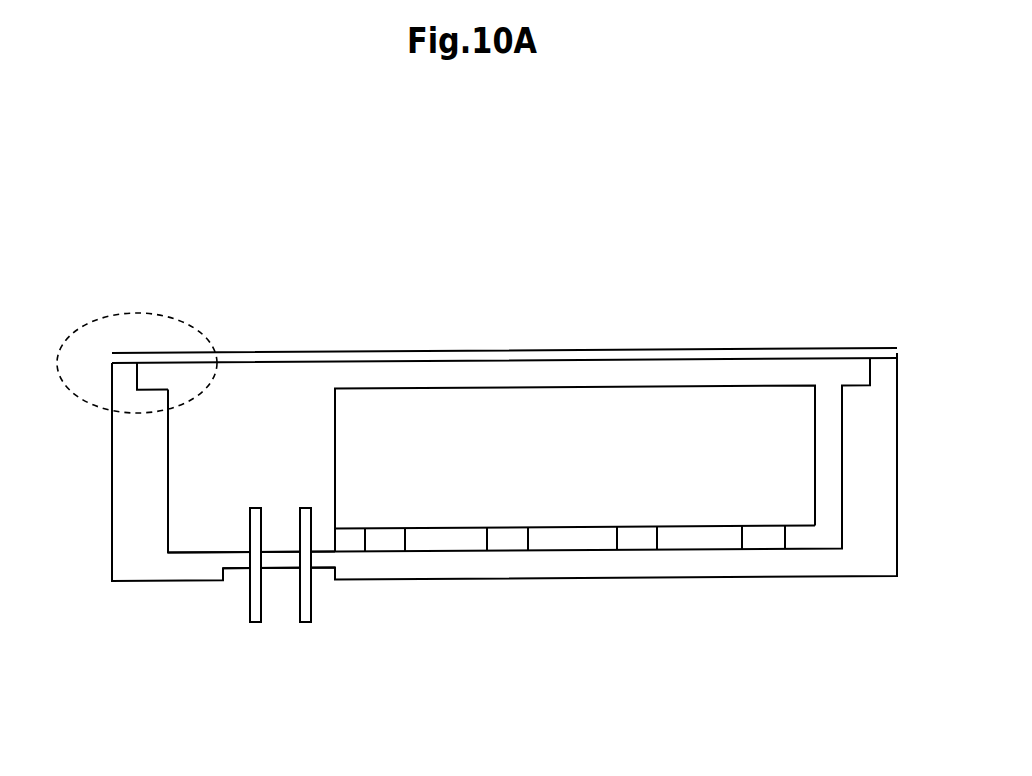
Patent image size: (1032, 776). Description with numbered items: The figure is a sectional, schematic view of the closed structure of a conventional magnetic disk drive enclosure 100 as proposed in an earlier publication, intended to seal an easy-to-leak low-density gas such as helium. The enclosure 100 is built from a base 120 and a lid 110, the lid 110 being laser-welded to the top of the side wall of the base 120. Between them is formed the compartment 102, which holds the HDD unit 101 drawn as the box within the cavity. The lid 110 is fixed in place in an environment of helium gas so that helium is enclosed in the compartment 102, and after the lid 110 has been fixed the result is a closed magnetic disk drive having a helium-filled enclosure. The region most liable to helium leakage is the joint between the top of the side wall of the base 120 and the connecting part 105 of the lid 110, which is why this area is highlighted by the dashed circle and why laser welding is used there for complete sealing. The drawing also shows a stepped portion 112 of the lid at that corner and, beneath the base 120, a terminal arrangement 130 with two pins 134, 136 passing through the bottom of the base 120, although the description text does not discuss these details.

The enclosure 100 is at (574, 287).
The HDD unit 101 is at (335, 455).
The compartment 102 is at (745, 366).
The connecting part 105 is at (127, 315).
The lid 110 is at (435, 349).
The stepped portion of lid 112 is at (123, 353).
The base 120 is at (573, 578).
The external terminal 130 is at (285, 626).
The lead pin 134 is at (253, 622).
The lead pin 136 is at (305, 622).